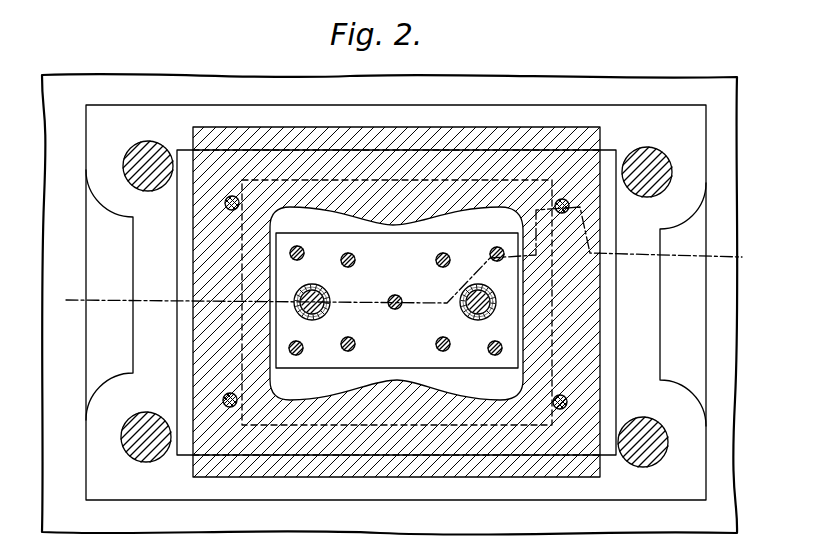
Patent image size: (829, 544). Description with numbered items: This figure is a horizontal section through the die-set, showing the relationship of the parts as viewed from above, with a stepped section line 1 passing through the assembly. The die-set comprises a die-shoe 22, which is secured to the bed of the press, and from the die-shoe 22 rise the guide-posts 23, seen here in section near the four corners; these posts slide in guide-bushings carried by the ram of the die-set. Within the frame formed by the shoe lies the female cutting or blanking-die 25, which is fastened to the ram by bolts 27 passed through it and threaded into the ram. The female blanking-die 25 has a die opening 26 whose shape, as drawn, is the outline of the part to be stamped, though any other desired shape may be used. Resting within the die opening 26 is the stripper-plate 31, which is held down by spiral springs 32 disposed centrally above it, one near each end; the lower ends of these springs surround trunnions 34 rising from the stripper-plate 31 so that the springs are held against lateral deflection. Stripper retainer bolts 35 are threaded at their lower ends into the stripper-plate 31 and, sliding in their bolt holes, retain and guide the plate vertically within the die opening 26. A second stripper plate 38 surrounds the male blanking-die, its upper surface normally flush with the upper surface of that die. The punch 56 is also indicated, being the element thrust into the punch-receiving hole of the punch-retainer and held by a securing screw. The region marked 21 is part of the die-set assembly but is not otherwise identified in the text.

The section line 1- 1 is at (403, 258).
The press platen block 21 is at (467, 111).
The die-shoe 22 is at (169, 113).
The guide-posts 23 is at (140, 156).
The female cutting or blanking-die 25 is at (210, 333).
The die opening 26 is at (295, 215).
The bolts 27 is at (225, 203).
The stripper-plate 31 is at (481, 240).
The spiral springs 32 is at (328, 312).
The trunnions 34 is at (328, 298).
The stripper retainer bolts 35 is at (302, 258).
The second stripper plate 38 is at (606, 313).
The punch 56 is at (355, 257).